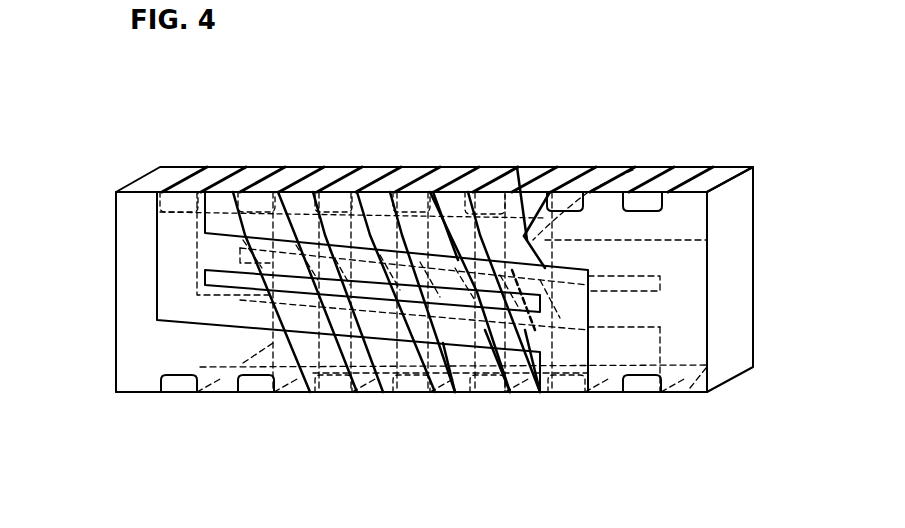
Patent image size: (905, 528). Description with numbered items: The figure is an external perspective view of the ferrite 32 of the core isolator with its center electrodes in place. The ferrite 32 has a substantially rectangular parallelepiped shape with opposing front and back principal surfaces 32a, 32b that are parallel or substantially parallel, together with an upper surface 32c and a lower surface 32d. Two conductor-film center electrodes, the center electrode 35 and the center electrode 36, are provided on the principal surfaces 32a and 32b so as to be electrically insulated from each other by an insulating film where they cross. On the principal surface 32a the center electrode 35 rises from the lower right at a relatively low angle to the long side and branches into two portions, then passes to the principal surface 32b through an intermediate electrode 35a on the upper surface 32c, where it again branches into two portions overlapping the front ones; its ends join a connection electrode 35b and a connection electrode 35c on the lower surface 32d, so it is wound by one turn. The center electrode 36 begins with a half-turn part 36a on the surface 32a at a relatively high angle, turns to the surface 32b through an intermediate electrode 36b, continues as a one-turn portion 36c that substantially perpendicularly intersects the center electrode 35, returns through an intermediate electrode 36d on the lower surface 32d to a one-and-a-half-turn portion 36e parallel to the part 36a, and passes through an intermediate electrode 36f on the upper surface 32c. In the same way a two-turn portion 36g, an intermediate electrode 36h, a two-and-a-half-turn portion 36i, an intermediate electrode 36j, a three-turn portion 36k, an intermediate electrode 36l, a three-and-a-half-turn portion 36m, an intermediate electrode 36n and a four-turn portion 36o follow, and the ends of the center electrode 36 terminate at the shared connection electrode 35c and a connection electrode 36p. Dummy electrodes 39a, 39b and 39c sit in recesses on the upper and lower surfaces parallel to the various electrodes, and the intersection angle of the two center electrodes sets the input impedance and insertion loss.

The ferrite 32 is at (757, 213).
The front principal surface 32a is at (126, 359).
The back principal surface 32b is at (743, 276).
The upper surface 32c is at (715, 170).
The lower surface 32d is at (697, 395).
The center electrode 35 is at (447, 395).
The intermediate electrode 35a is at (213, 172).
The connection electrode 35b is at (650, 394).
The connection electrode 35c is at (608, 394).
The center electrode 36 is at (524, 238).
The 0.5-turn part 36a is at (552, 190).
The intermediate electrode 36b is at (517, 167).
The one-turn portion 36c is at (633, 170).
The intermediate electrode 36d is at (535, 397).
The 1.5-turn portion 36e is at (497, 394).
The intermediate electrode 36f is at (445, 170).
The 2-turn portion 36g is at (488, 394).
The intermediate electrode 36h is at (418, 397).
The 2.5-turn portion 36i is at (372, 397).
The intermediate electrode 36j is at (368, 172).
The 3-turn portion 36k is at (378, 397).
The intermediate electrode 36l is at (335, 397).
The 3.5-turn portion 36m is at (320, 394).
The intermediate electrode 36n is at (290, 172).
The 4-turn portion 36o is at (243, 397).
The connection electrode 36p is at (258, 394).
The dummy electrode 39a is at (605, 170).
The dummy electrode 39b is at (680, 170).
The bottom terminal pad 39c is at (178, 394).